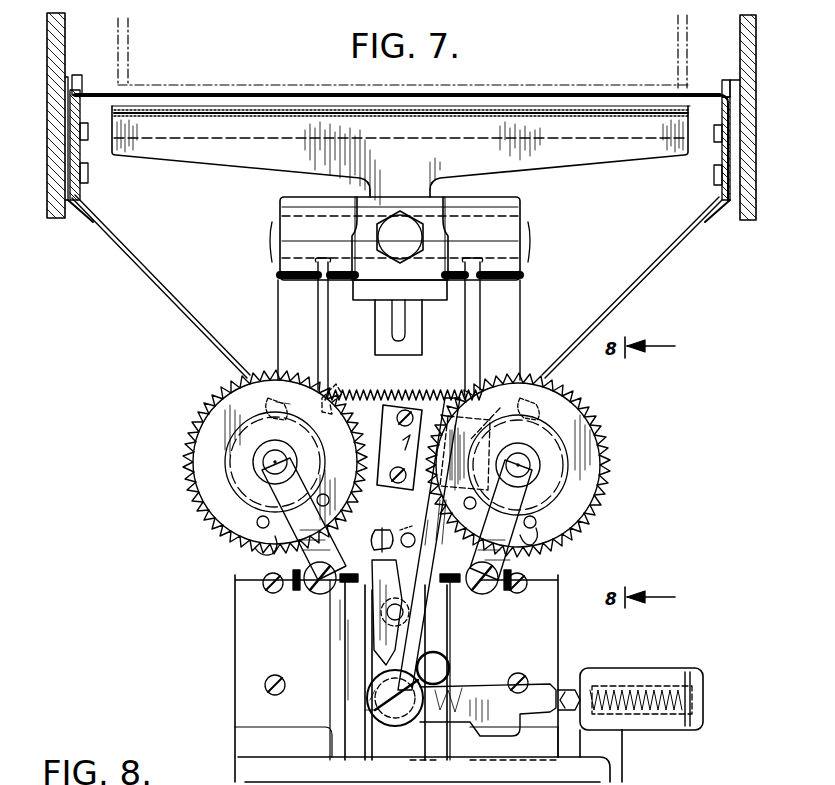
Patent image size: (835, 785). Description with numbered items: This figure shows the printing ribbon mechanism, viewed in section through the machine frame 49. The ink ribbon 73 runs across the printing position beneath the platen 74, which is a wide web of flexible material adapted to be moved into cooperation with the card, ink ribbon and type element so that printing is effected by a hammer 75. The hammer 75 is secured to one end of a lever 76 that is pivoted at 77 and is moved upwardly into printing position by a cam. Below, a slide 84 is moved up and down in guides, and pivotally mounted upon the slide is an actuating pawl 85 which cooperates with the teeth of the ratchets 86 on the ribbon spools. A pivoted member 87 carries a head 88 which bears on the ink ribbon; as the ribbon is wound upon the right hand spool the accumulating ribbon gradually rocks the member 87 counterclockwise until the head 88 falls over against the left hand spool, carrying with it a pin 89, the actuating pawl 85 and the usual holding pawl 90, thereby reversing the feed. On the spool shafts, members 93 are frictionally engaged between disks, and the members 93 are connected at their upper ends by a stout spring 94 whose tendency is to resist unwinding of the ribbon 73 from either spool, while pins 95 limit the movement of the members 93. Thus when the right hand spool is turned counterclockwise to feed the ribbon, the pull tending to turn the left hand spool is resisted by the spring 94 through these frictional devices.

The frame member 49 is at (118, 40).
The ink ribbon 73 is at (148, 282).
The platen 74 is at (487, 103).
The hammer 75 is at (593, 130).
The lever 76 is at (430, 290).
The pivot 77 is at (525, 240).
The slide 84 is at (378, 638).
The actuating pawl 85 is at (385, 537).
The ratchets 86 is at (215, 408).
The pivoted member 87 is at (487, 700).
The head 88 is at (400, 398).
The pin 89 is at (415, 545).
The holding pawl 90 is at (440, 395).
The member 93 is at (270, 411).
The spring 94 is at (362, 378).
The pins 95 is at (580, 402).